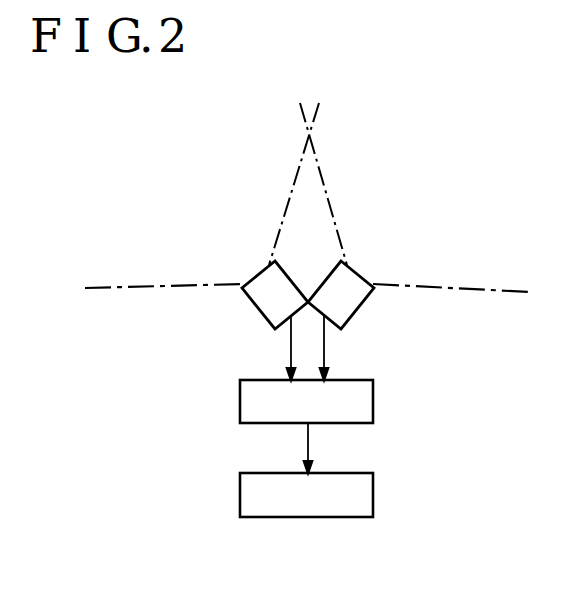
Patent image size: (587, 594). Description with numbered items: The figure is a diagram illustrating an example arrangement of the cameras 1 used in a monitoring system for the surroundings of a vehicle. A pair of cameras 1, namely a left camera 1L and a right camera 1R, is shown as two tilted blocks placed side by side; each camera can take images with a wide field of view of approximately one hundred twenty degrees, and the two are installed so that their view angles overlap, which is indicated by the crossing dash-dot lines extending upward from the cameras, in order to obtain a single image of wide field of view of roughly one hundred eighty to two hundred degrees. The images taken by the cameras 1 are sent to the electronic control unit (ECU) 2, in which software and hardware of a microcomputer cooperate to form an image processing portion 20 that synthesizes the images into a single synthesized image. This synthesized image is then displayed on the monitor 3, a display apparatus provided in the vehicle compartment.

The camera 1 is at (309, 310).
The left camera 1L is at (266, 304).
The right camera 1R is at (350, 306).
The electronic control unit (ECU) 2 is at (365, 401).
The image processing portion 20 is at (373, 402).
The monitor (display apparatus) 3 is at (373, 490).